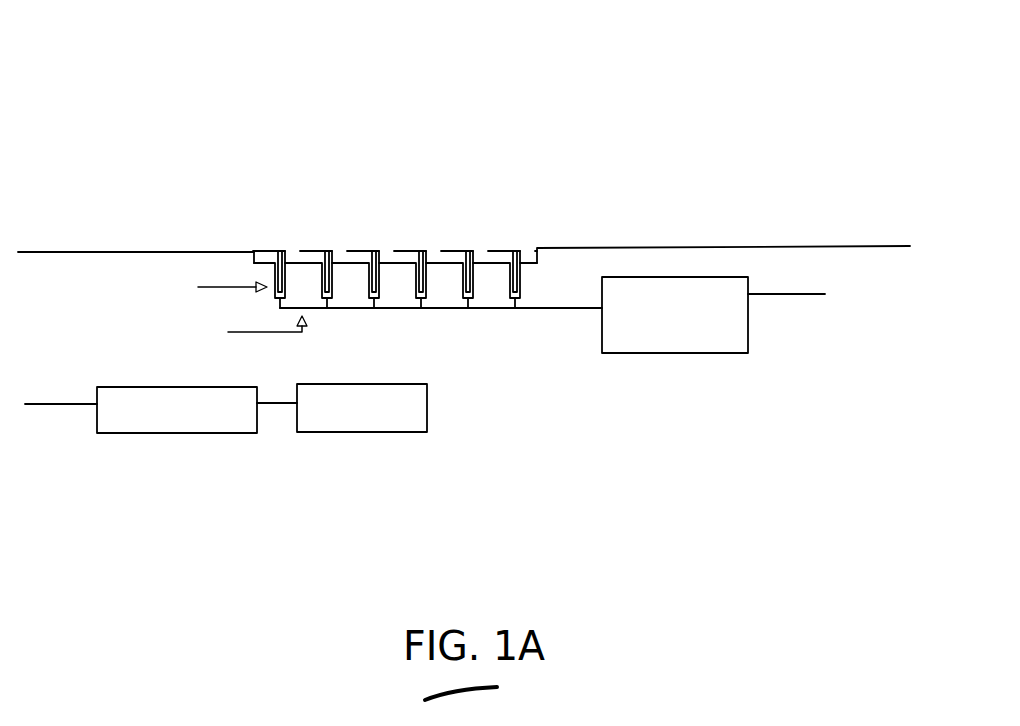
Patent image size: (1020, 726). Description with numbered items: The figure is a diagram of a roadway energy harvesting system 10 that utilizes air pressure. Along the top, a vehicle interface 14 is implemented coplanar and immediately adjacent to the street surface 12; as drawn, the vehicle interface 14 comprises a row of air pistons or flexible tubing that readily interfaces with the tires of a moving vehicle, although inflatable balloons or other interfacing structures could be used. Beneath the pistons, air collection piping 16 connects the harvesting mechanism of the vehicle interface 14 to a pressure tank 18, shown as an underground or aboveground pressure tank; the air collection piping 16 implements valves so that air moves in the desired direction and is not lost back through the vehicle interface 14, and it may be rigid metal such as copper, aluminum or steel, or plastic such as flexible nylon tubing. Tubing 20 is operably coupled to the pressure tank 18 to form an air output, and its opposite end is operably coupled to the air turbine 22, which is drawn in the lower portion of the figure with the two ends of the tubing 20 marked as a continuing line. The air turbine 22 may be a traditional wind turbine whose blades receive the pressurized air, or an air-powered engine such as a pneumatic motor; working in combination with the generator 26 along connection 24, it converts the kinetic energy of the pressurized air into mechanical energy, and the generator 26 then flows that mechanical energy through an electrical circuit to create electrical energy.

The roadway energy harvesting system 10 is at (157, 74).
The street surface 12 is at (41, 253).
The vehicle interface 14 is at (277, 250).
The air collection piping 16 is at (500, 308).
The pressure tank 18 is at (697, 353).
The tubing 20 is at (797, 294).
The air turbine 22 is at (180, 390).
The connection 24 is at (278, 397).
The generator 26 is at (368, 388).